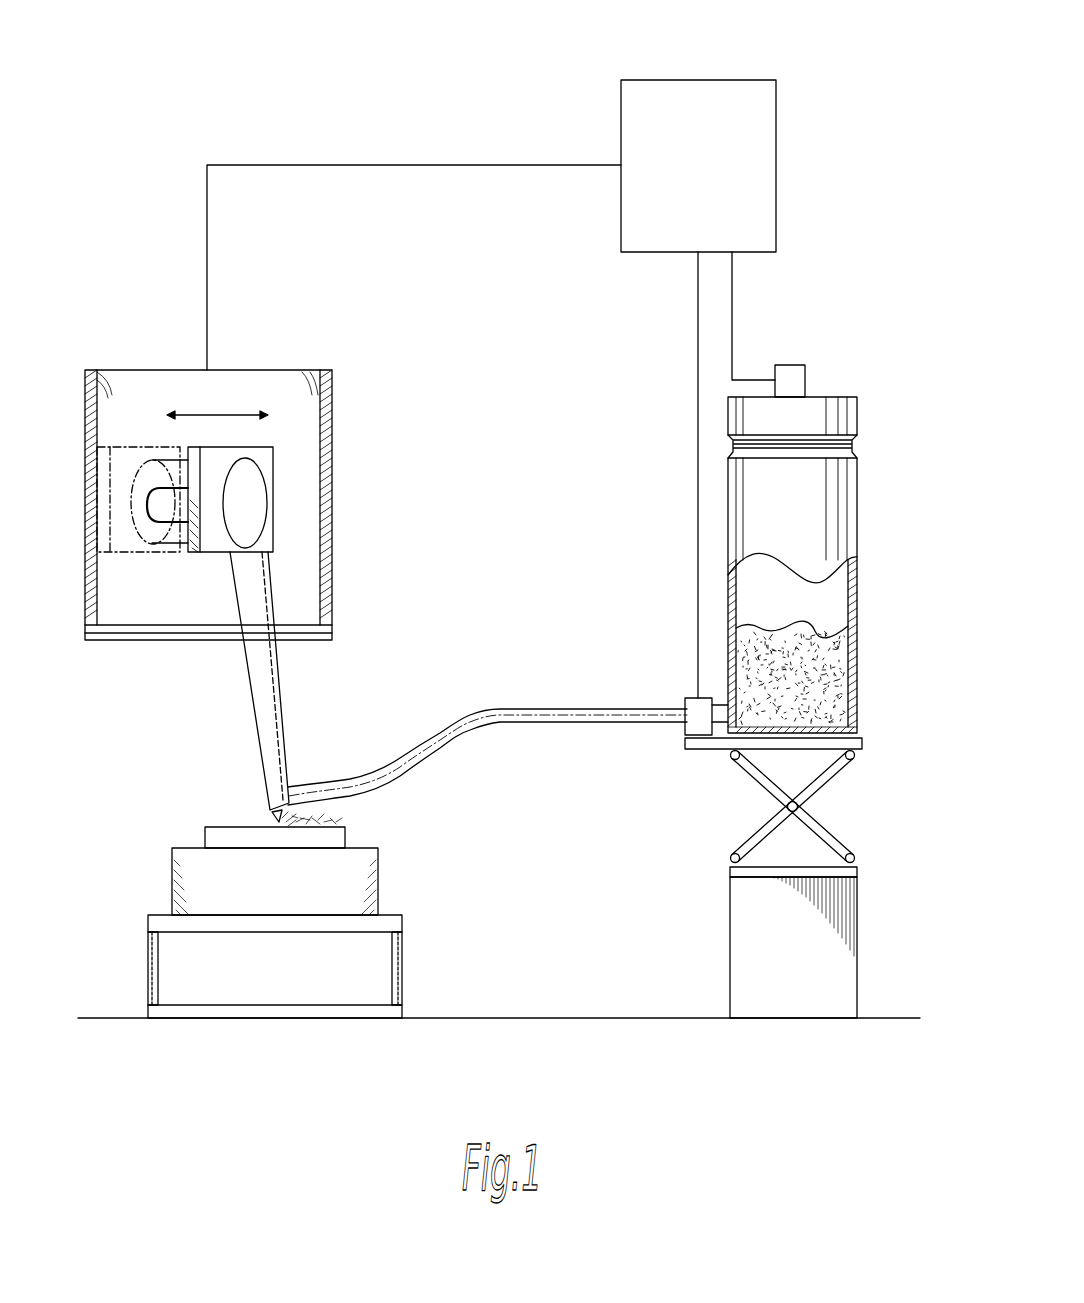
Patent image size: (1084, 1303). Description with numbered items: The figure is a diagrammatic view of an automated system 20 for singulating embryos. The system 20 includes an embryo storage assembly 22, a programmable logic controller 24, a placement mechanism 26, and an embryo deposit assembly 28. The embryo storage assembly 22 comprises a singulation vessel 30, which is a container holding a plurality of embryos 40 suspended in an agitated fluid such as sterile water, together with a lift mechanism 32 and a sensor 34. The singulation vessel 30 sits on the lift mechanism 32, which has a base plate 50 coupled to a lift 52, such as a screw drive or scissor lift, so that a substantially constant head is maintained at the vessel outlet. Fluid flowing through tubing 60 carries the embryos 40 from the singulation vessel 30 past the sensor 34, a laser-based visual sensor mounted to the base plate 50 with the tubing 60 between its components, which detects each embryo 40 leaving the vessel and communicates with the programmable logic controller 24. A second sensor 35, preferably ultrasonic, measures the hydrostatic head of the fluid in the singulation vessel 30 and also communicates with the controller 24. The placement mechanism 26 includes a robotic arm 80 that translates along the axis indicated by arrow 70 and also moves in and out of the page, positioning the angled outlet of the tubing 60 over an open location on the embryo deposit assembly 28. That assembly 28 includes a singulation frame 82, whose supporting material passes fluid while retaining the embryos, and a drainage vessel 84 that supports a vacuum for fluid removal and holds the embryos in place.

The automated system 20 is at (845, 235).
The embryo storage assembly 22 is at (862, 540).
The programmable logic controller 24 is at (742, 78).
The placement mechanism 26 is at (135, 362).
The embryo deposit assembly 28 is at (165, 870).
The singulation vessel 30 is at (855, 690).
The lift mechanism 32 is at (838, 805).
The sensor 34 is at (686, 740).
The second sensor 35 is at (808, 378).
The embryos 40 is at (848, 655).
The base plate 50 is at (862, 742).
The lift 52 is at (735, 858).
The tubing 60 is at (492, 707).
The arrow 70 is at (200, 412).
The robotic arm 80 is at (247, 680).
The singulation frame 82 is at (345, 838).
The drainage vessel 84 is at (172, 885).